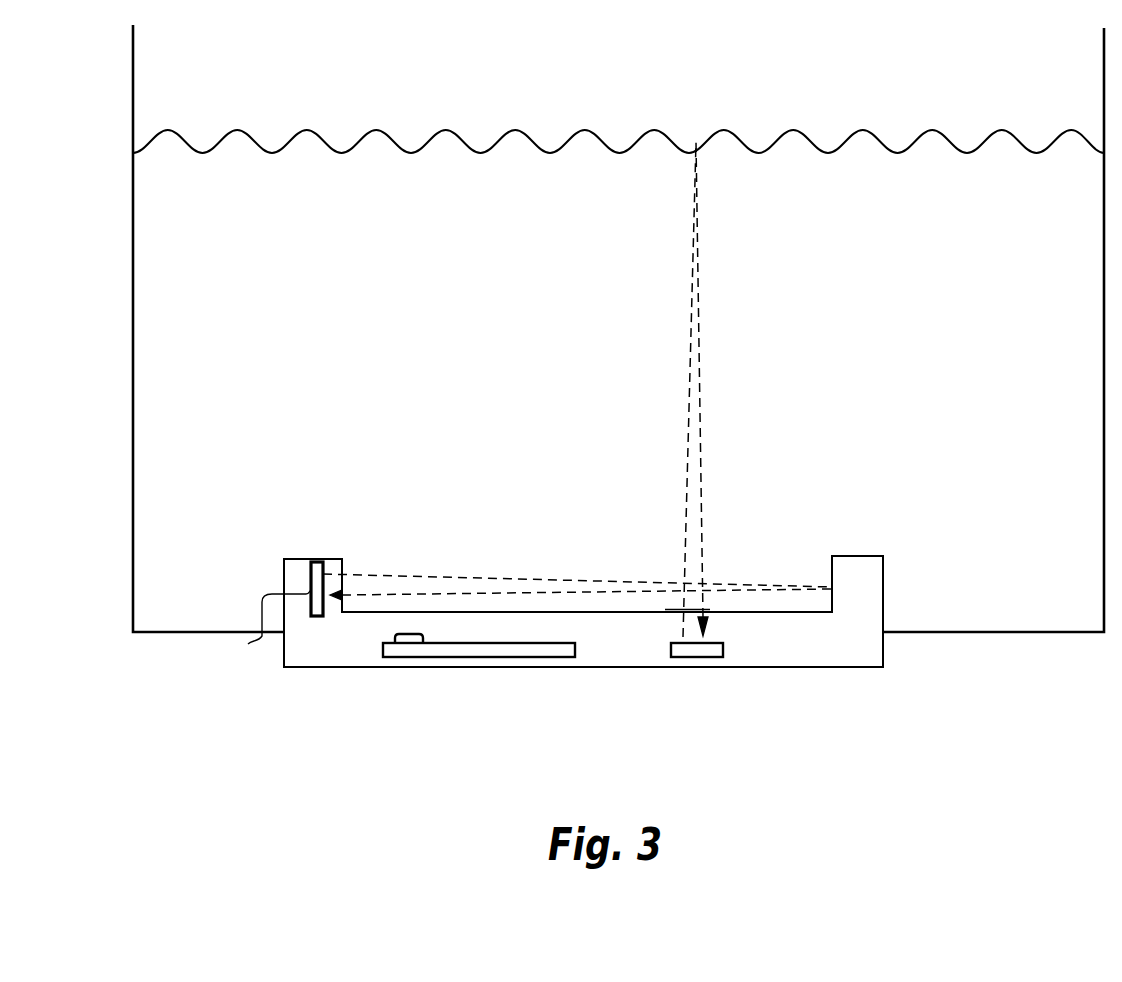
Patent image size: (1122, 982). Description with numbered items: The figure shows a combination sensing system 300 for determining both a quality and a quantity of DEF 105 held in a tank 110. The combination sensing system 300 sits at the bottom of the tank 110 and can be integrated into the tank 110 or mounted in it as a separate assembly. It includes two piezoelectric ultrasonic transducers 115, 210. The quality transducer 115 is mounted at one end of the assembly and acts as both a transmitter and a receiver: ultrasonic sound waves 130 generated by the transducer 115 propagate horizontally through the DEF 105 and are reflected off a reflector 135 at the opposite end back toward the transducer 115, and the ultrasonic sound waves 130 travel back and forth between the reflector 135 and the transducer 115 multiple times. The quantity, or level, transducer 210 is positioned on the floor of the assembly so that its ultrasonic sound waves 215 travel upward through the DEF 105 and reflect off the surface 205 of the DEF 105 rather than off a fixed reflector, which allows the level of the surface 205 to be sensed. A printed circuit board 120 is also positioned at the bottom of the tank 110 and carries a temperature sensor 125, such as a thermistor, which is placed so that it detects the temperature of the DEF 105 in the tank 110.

The DEF 105 is at (413, 284).
The tank 110 is at (133, 410).
The piezoelectric ultrasonic transducer 115 is at (264, 615).
The printed circuit board 120 is at (475, 657).
The temperature sensor 125 is at (407, 628).
The ultrasonic sound waves 130 is at (472, 570).
The reflector 135 is at (832, 565).
The surface 205 is at (116, 147).
The piezoelectric ultrasonic transducer 210 is at (703, 657).
The ultrasonic sound waves 215 is at (675, 485).
The combination sensing system 300 is at (832, 638).